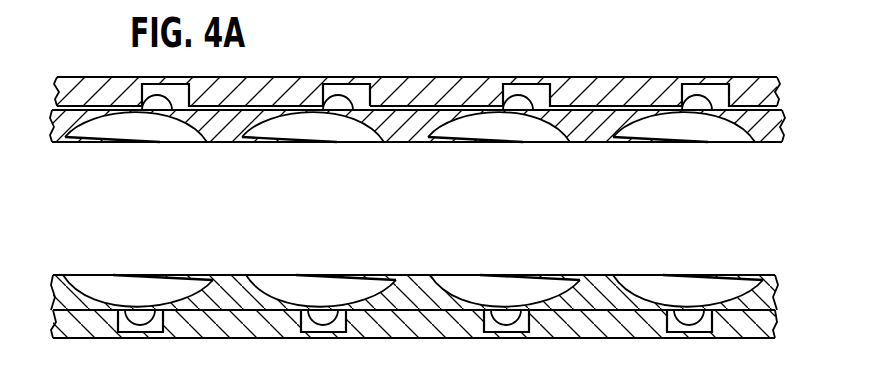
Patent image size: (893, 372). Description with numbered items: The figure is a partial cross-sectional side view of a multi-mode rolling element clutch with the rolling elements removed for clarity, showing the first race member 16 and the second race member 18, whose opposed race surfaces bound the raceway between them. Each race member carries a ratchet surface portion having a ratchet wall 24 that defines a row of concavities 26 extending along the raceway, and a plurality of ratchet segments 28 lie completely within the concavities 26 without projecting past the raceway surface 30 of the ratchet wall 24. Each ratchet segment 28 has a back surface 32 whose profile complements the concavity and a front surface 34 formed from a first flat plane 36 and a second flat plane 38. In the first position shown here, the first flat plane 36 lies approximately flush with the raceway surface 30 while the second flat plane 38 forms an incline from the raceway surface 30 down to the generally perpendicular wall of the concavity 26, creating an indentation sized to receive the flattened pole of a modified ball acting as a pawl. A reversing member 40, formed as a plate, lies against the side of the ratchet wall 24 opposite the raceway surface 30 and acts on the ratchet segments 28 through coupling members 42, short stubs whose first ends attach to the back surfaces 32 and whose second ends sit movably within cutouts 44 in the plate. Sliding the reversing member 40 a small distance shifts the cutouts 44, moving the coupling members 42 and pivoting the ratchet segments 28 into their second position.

The first race member 16 is at (445, 162).
The second race member 18 is at (773, 284).
The ratchet wall 24 is at (786, 142).
The concavities 26 is at (670, 143).
The ratchet segments 28 is at (162, 143).
The raceway surface 30 is at (768, 143).
The back surface 32 is at (493, 110).
The front surface 34 is at (490, 143).
The first flat plane 36 is at (533, 143).
The second flat plane 38 is at (437, 143).
The reversing member 40 is at (417, 70).
The coupling members 42 is at (525, 97).
The cutouts 44 is at (355, 84).